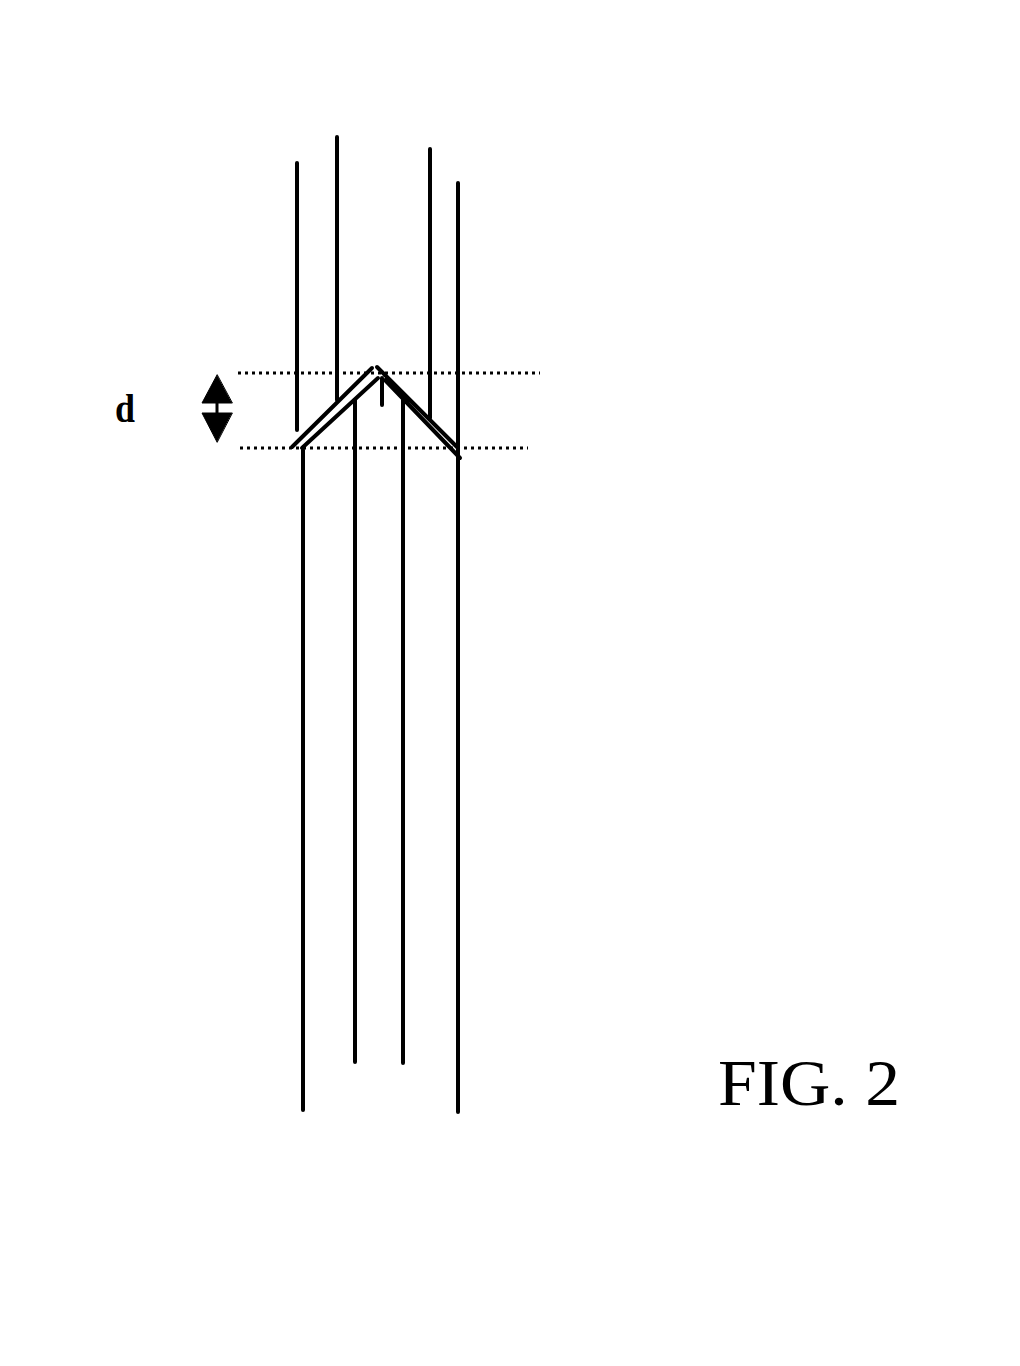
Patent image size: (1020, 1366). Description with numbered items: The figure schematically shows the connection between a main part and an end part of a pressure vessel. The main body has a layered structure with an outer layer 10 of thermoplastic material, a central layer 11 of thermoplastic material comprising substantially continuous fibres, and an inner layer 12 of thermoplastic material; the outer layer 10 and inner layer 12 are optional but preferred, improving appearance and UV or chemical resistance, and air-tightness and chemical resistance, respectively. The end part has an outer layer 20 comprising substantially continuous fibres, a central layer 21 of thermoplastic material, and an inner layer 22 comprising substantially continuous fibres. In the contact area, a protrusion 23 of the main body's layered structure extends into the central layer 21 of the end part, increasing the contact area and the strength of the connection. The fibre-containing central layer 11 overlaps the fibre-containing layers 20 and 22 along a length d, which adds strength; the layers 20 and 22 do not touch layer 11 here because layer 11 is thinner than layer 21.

The outer layer 10 is at (320, 637).
The central layer 11 is at (380, 1055).
The inner layer 12 is at (440, 762).
The outer layer 20 is at (310, 237).
The central layer 21 is at (382, 175).
The inner layer 22 is at (442, 253).
The protrusion 23 is at (377, 380).